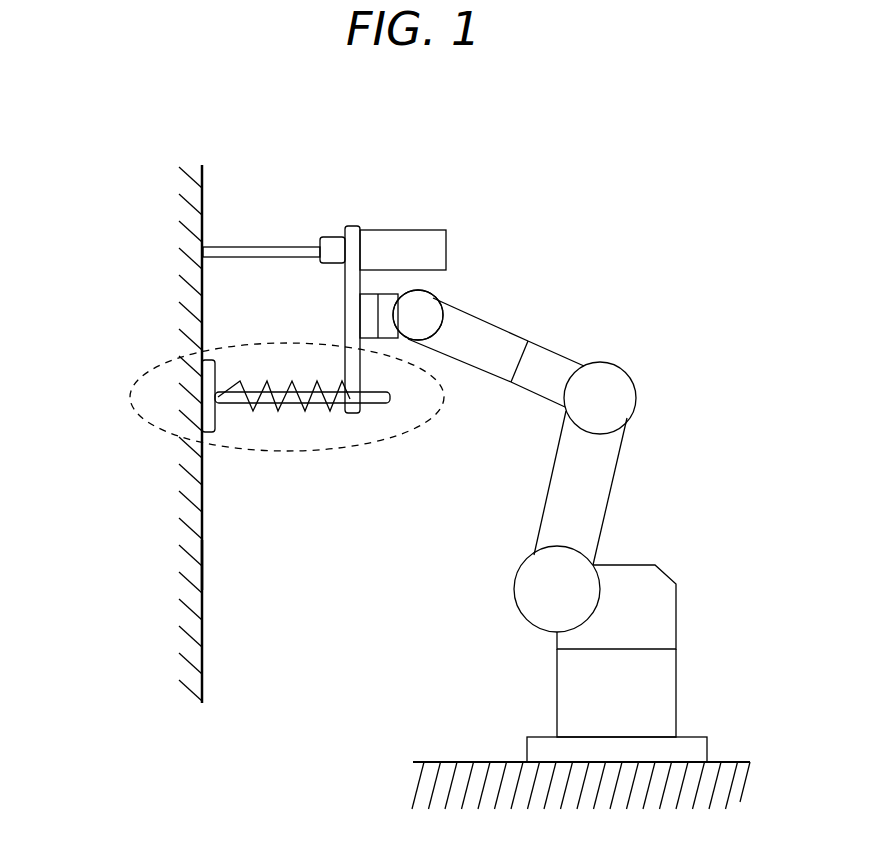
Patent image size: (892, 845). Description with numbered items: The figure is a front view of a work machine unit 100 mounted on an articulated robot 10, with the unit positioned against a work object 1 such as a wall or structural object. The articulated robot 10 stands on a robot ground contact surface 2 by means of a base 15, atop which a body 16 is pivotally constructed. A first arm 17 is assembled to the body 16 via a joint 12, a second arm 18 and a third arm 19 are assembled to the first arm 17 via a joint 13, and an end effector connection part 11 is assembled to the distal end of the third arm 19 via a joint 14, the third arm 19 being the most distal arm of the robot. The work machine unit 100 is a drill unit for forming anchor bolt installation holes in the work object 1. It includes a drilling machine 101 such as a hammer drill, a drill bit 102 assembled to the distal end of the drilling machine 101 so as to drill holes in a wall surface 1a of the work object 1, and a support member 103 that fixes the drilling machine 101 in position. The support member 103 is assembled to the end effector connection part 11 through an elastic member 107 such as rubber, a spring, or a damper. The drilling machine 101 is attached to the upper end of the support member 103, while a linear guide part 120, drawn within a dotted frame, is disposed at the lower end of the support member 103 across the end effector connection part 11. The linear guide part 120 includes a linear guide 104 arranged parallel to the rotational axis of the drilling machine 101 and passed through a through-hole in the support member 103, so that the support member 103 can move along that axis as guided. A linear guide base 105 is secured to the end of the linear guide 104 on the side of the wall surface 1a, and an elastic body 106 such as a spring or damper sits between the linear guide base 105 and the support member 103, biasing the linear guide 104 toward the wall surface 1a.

The work object 1 is at (182, 194).
The wall surface 1a is at (200, 565).
The robot ground contact surface 2 is at (455, 762).
The articulated robot 10 is at (662, 340).
The end effector connection part 11 is at (398, 294).
The joint 12 is at (525, 592).
The joint 13 is at (625, 398).
The joint 14 is at (430, 318).
The base 15 is at (670, 688).
The body 16 is at (660, 590).
The first arm 17 is at (607, 488).
The second arm 18 is at (552, 354).
The third arm 19 is at (484, 362).
The work machine unit 100 is at (447, 159).
The drilling machine 101 is at (423, 237).
The drill bit 102 is at (237, 247).
The support member 103 is at (353, 227).
The linear guide 104 is at (372, 403).
The linear guide base 105 is at (218, 435).
The elastic body 106 is at (312, 413).
The elastic member 107 is at (363, 316).
The linear guide part 120 is at (276, 436).